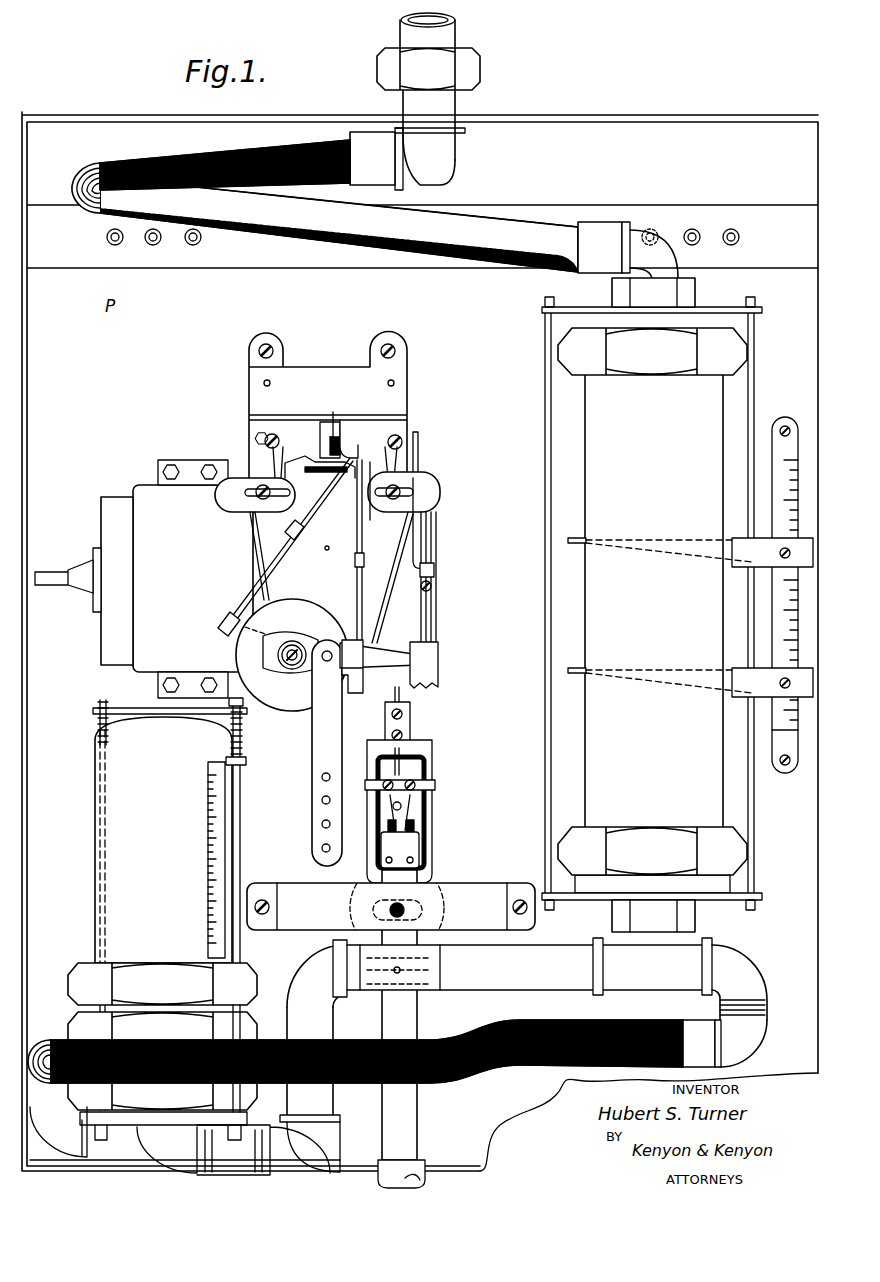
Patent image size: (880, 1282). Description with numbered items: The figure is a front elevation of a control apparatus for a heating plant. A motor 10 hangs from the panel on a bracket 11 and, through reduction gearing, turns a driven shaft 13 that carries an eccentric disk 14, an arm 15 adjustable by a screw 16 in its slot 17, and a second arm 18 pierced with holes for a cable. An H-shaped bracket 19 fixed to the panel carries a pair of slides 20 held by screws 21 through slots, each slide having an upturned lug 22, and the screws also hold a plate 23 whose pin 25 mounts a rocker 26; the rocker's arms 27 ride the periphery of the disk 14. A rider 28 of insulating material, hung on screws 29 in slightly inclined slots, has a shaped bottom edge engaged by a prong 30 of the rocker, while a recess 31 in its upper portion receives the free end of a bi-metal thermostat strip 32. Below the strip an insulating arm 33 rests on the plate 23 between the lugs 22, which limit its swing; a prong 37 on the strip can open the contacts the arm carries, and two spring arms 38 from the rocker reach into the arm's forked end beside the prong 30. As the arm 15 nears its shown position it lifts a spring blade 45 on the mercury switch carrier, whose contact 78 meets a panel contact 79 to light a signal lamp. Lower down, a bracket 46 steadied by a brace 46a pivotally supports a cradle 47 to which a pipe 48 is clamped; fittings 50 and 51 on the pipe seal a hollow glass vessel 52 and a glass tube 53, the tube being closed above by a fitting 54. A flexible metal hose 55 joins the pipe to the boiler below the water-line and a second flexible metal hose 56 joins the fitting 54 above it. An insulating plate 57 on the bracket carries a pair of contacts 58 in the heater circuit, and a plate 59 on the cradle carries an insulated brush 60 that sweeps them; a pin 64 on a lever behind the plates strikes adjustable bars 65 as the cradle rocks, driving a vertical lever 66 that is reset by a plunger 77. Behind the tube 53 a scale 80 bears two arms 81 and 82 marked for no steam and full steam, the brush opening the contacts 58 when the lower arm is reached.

The motor 10 is at (147, 486).
The bracket 11 is at (195, 466).
The driven shaft 13 is at (385, 650).
The disk 14 is at (385, 626).
The arm 15 is at (440, 650).
The screw 16 is at (292, 640).
The slot 17 is at (298, 668).
The second arm 18 is at (314, 760).
The H-shaped bracket 19 is at (408, 356).
The slides 20 is at (428, 492).
The screws 21 is at (400, 488).
The lugs 22 is at (335, 454).
The plate 23 is at (420, 543).
The pin 25 is at (327, 556).
The rocker 26 is at (432, 582).
The arms 27 is at (242, 626).
The rider 28 is at (414, 430).
The screws 29 is at (265, 440).
The prong 30 is at (342, 430).
The recess 31 is at (333, 420).
The bi-metal thermostat strip 32 is at (326, 436).
The arm 33 is at (314, 473).
The prong 37 is at (330, 430).
The spring arms 38 is at (356, 512).
The spring blade 45 is at (438, 676).
The bracket 46 is at (418, 1020).
The brace 46a is at (296, 888).
The cradle 47 is at (432, 972).
The pipe 48 is at (488, 988).
The terminal fitting 50 is at (76, 1020).
The terminal fitting 51 is at (722, 884).
The hollow glass vessel 52 is at (106, 843).
The glass tube 53 is at (652, 605).
The fitting 54 is at (730, 350).
The flexible metal hose 55 is at (472, 1080).
The flexible metal hose 56 is at (492, 231).
The plate 57 is at (428, 845).
The contacts 58 is at (418, 770).
The plate 59 is at (433, 874).
The insulated brush 60 is at (412, 739).
The pin 64 is at (428, 794).
The bars 65 is at (416, 817).
The lever 66 is at (420, 522).
The plunger 77 is at (405, 910).
The contact 78 is at (436, 606).
The contact 79 is at (440, 556).
The scale 80 is at (790, 604).
The arm 81 is at (733, 548).
The arm 82 is at (741, 688).